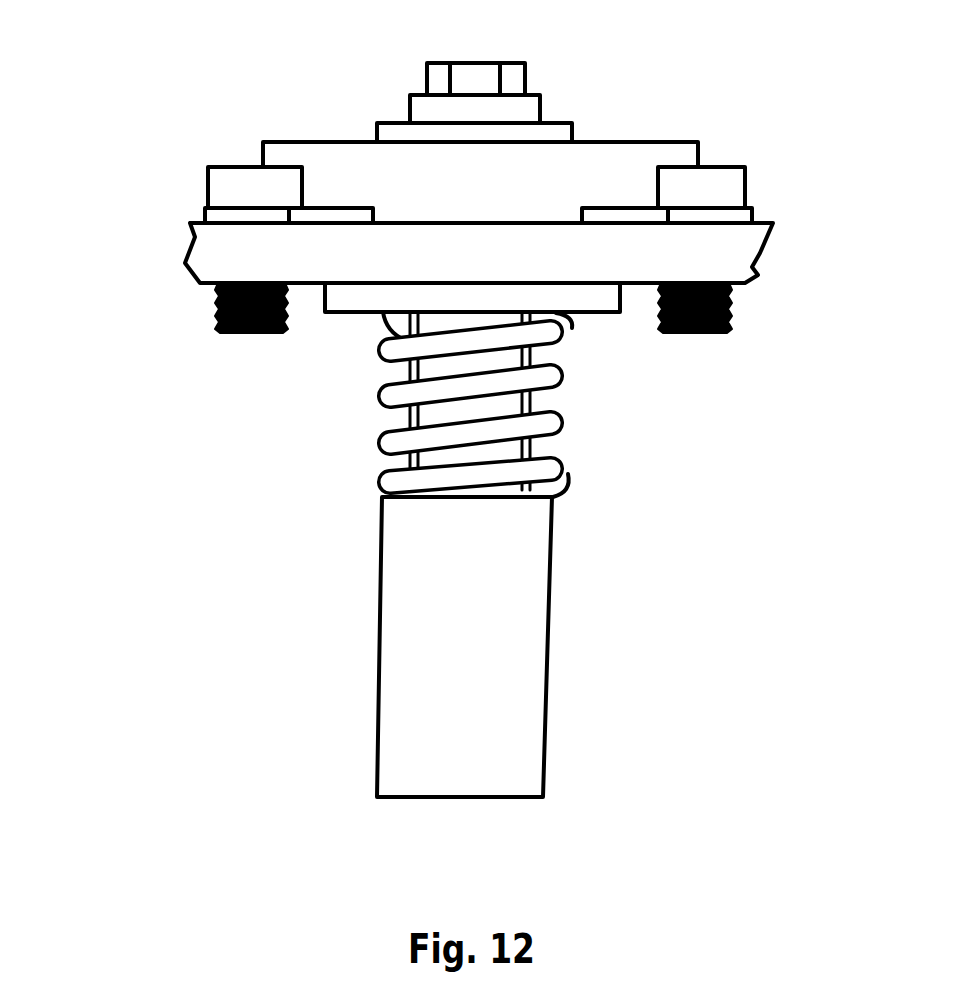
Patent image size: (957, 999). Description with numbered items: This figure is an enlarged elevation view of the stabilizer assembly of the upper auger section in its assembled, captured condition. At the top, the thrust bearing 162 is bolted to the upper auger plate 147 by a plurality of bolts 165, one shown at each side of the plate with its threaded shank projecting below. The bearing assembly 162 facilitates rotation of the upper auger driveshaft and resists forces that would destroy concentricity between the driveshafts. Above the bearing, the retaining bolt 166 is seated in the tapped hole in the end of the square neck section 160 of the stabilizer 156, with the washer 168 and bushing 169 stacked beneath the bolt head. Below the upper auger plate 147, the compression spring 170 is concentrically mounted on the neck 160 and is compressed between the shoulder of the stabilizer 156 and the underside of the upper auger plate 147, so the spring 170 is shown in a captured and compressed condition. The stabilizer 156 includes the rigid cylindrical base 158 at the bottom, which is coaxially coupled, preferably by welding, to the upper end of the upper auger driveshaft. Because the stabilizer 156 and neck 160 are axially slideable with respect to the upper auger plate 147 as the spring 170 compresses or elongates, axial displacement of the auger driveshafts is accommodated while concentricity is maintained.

The upper auger plate 147 is at (773, 237).
The stabilizer 156 is at (684, 582).
The cylindrical base 158 is at (378, 670).
The neck section 160 is at (402, 368).
The thrust bearing 162 is at (136, 190).
The bolts 165 is at (208, 170).
The retaining bolt 166 is at (478, 63).
The washer 168 is at (538, 100).
The bushing 169 is at (573, 132).
The compression spring 170 is at (562, 387).